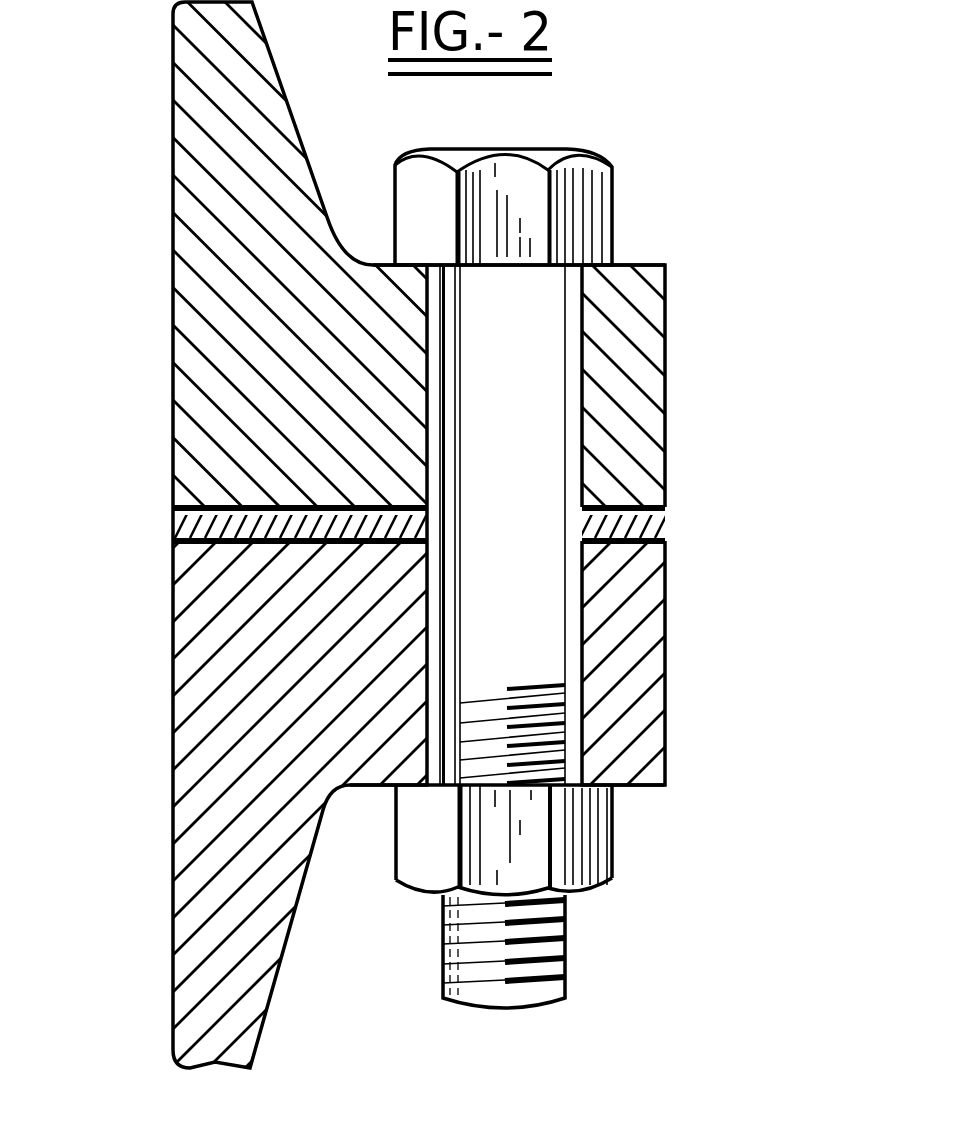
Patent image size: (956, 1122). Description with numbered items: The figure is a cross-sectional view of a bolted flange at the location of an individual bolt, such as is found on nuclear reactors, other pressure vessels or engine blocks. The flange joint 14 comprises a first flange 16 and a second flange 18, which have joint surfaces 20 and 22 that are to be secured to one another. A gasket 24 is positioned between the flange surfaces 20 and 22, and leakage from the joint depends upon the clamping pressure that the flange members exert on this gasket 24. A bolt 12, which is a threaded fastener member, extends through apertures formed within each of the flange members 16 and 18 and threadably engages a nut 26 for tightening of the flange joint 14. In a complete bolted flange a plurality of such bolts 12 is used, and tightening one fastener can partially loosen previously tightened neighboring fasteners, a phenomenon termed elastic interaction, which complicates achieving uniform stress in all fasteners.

The bolt 12 is at (522, 395).
The flange joint 14 is at (152, 394).
The first flange 16 is at (666, 466).
The second flange 18 is at (666, 682).
The joint surface 20 is at (632, 490).
The joint surface 22 is at (624, 558).
The gasket 24 is at (158, 526).
The nut 26 is at (613, 832).